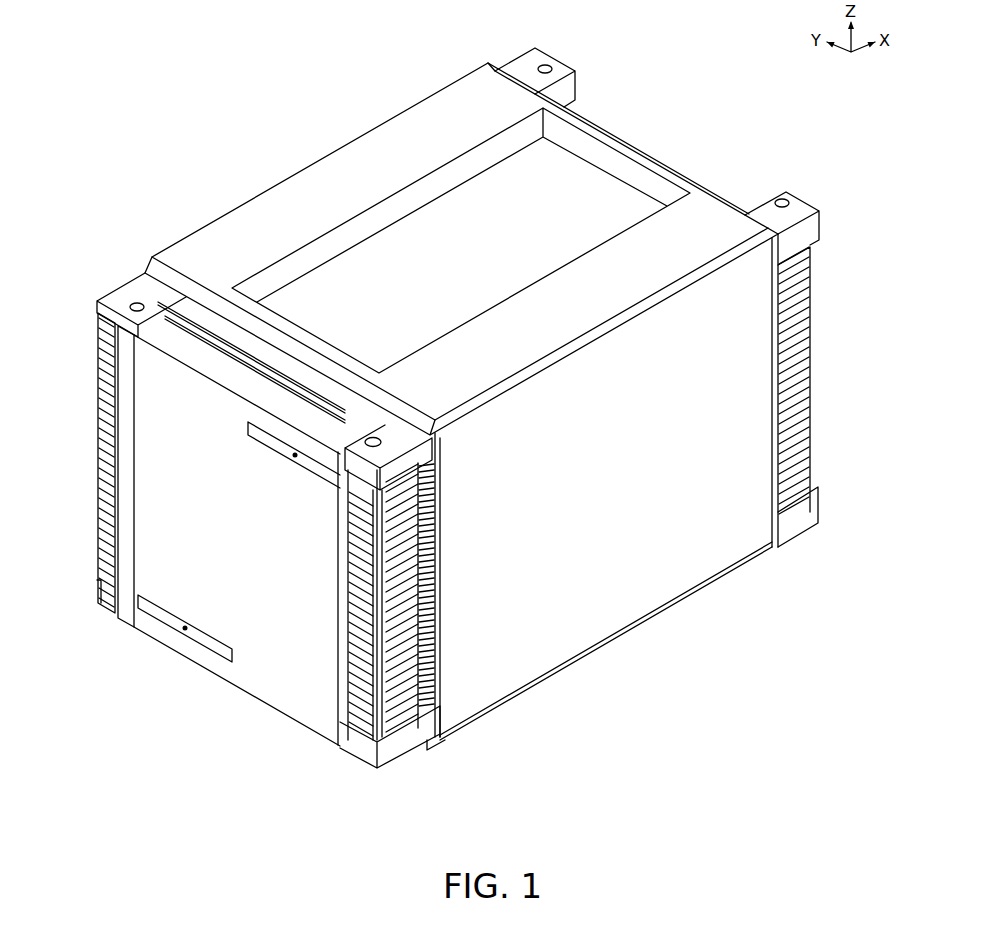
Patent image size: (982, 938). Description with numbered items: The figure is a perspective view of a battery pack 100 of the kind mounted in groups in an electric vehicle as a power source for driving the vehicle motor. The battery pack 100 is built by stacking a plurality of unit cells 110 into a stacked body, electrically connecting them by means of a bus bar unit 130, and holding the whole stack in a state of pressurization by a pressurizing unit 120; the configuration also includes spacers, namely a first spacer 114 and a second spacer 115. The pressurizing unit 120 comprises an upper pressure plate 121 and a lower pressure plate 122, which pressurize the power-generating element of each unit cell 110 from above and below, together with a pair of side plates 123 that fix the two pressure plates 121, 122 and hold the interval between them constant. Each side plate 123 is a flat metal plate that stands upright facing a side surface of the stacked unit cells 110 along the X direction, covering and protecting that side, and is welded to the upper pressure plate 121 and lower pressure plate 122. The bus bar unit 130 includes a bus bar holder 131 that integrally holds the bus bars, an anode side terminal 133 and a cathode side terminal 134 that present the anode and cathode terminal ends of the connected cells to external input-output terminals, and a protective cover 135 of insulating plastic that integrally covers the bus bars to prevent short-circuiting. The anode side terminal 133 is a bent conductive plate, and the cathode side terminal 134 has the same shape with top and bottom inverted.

The battery pack 100 is at (70, 31).
The unit cell 110 is at (432, 605).
The first spacer 114 is at (448, 742).
The second spacer 115 is at (788, 468).
The pressurizing unit 120 is at (583, 533).
The upper pressure plate 121 is at (435, 477).
The lower pressure plate 122 is at (395, 742).
The side plate 123 is at (672, 533).
The bus bar unit 130 is at (157, 562).
The bus bar holder 131 is at (347, 660).
The anode side terminal 133 is at (305, 462).
The cathode side terminal 134 is at (205, 642).
The protective cover 135 is at (280, 643).